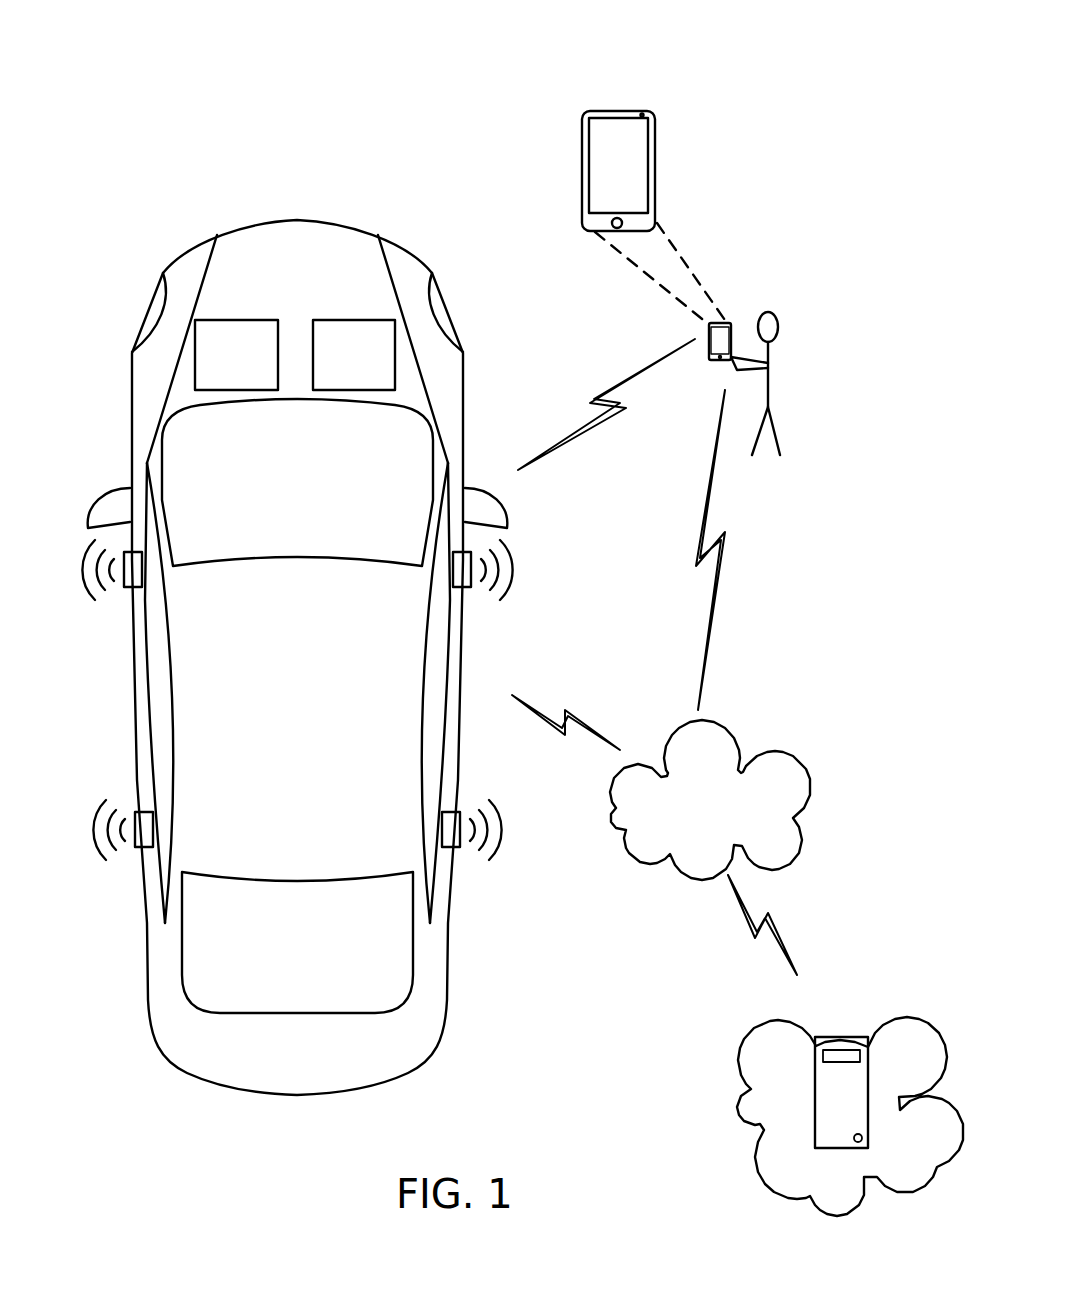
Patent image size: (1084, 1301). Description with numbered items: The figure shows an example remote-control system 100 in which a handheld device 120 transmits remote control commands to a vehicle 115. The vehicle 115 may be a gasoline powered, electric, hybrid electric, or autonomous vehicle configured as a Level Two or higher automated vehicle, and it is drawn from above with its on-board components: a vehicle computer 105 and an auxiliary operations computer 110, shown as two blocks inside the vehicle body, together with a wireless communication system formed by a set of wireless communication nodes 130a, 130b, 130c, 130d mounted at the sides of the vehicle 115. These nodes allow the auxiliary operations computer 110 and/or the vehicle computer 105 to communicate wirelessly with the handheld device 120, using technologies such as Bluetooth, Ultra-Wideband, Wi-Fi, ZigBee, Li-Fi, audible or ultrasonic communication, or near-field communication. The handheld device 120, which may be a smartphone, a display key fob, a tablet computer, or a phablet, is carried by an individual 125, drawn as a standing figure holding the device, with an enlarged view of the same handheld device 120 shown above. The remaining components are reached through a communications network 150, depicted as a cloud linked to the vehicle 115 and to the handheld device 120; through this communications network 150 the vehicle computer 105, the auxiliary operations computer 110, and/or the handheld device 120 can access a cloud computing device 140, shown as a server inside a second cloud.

The remote-control system 100 is at (836, 90).
The vehicle computer 105 is at (218, 365).
The auxiliary operations computer 110 is at (336, 365).
The vehicle 115 is at (150, 248).
The handheld device 120 is at (657, 182).
The individual 125 is at (800, 345).
The wireless communication node 130a is at (130, 590).
The wireless communication node 130b is at (138, 850).
The wireless communication node 130c is at (465, 590).
The wireless communication node 130d is at (457, 850).
The cloud computing device 140 is at (812, 1100).
The communications network 150 is at (789, 819).